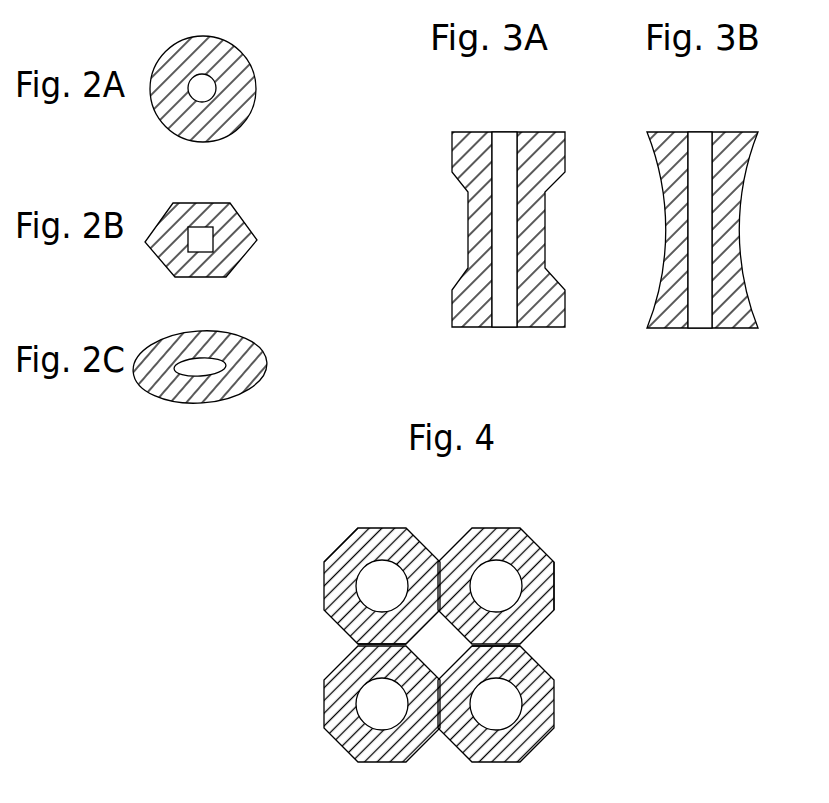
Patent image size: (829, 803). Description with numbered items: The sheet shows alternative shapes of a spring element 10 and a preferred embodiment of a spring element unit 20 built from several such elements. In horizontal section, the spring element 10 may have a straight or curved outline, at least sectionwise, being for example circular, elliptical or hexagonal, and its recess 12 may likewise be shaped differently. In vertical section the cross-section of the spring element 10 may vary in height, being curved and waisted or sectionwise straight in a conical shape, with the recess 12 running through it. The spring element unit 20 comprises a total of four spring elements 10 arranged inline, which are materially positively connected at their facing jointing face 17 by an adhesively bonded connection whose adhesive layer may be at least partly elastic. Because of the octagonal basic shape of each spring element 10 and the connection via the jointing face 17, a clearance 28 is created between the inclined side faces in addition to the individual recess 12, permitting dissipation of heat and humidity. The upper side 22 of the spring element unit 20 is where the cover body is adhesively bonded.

In FIG. 2A, the spring element 10 is at (238, 97).
In FIG. 2B, the spring element 10 is at (234, 245).
In FIG. 2C, the spring element 10 is at (236, 372).
In FIG. 3A, the spring element 10 is at (534, 191).
In FIG. 3B, the spring element 10 is at (687, 200).
In FIG. 4, the spring element 10 is at (435, 632).
In FIG. 2A, the recess 12 is at (247, 60).
In FIG. 2B, the recess 12 is at (242, 219).
In FIG. 2C, the recess 12 is at (248, 345).
In FIG. 3A, the recess 12 is at (508, 152).
In FIG. 3B, the recess 12 is at (717, 202).
In FIG. 4, the recess 12 is at (382, 577).
In FIG. 4, the jointing face 17 is at (358, 644).
In FIG. 4, the spring element unit 20 is at (461, 632).
In FIG. 4, the upper side 22 is at (348, 545).
In FIG. 4, the clearance 28 is at (452, 656).